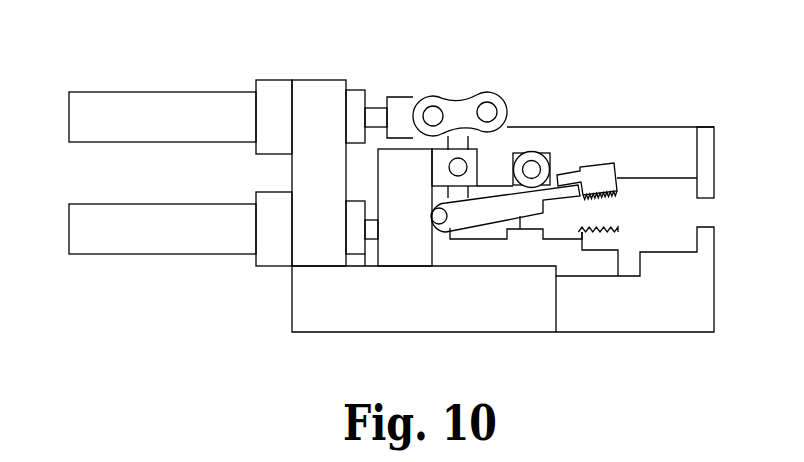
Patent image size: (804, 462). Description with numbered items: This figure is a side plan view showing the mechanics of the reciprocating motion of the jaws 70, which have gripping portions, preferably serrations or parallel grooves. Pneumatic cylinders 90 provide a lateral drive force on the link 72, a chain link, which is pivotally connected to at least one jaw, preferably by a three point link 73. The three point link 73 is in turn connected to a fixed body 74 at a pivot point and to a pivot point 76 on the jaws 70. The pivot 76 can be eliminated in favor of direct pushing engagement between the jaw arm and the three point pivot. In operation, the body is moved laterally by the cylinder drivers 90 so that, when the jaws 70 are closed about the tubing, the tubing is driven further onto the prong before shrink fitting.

The pneumatic cylinders 90 is at (162, 105).
The link 72 is at (457, 101).
The three point link 73 is at (497, 152).
The pivot point 76 is at (536, 162).
The fixed body 74 is at (393, 191).
The jaws 70 is at (598, 178).